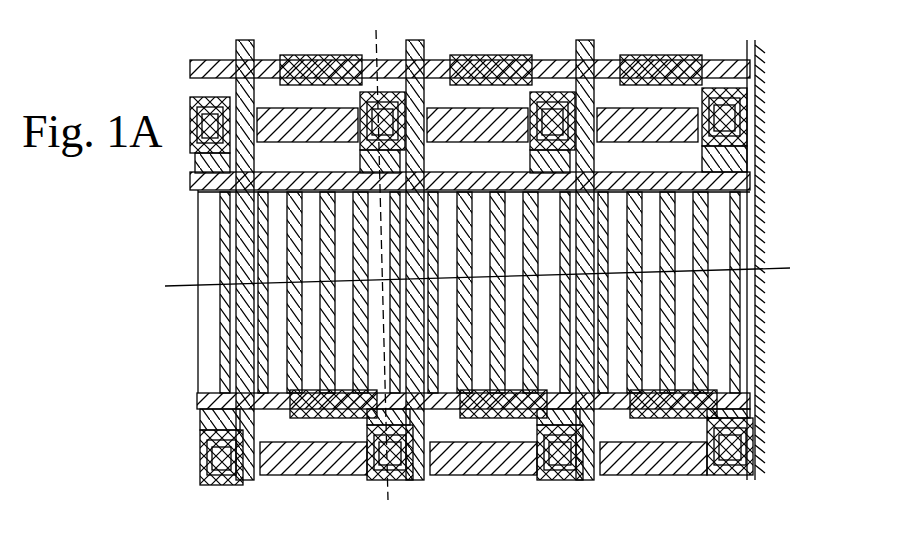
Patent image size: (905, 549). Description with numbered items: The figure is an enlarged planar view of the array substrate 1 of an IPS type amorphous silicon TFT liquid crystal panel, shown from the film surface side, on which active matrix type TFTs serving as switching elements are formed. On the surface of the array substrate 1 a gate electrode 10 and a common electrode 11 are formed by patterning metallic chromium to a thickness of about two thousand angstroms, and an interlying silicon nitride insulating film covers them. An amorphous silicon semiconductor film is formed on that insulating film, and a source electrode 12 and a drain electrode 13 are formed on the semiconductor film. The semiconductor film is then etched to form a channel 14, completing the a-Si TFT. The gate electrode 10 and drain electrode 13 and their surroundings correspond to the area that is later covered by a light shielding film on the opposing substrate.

The array substrate 1 is at (188, 446).
The gate electrode 10 is at (321, 476).
The common electrode 11 is at (760, 378).
The source electrode 12 is at (752, 79).
The drain electrode 13 is at (750, 118).
The channel 14 is at (752, 160).